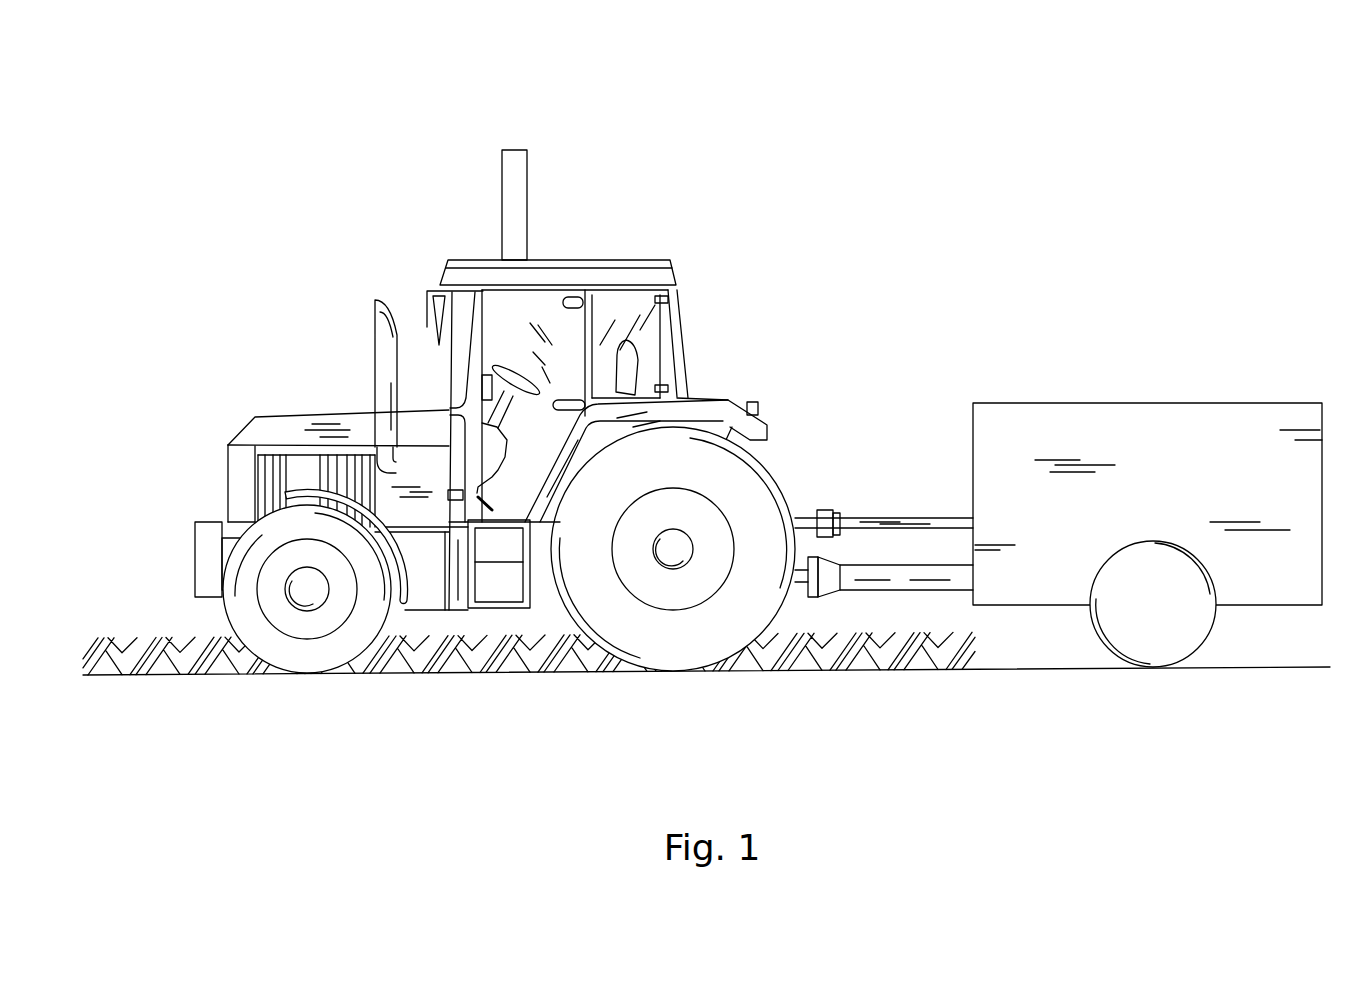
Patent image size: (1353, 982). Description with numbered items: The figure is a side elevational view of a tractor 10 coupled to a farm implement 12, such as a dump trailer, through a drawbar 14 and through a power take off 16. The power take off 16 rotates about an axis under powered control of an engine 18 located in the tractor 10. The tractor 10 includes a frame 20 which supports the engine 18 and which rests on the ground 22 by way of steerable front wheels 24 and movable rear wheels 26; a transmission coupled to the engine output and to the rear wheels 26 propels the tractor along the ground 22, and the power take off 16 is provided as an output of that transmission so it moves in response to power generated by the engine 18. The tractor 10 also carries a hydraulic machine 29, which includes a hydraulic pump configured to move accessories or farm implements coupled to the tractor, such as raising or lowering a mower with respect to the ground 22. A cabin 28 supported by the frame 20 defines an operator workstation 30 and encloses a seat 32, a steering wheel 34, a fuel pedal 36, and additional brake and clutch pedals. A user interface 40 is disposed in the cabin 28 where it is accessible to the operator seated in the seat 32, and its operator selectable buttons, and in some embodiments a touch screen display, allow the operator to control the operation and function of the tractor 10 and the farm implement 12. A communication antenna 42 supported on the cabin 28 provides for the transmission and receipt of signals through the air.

The tractor 10 is at (466, 240).
The farm implement 12 is at (1144, 403).
The drawbar 14 is at (803, 518).
The power take off 16 is at (828, 580).
The engine 18 is at (265, 490).
The frame 20 is at (428, 566).
The ground 22 is at (893, 671).
The steerable front wheels 24 is at (307, 657).
The movable rear wheels 26 is at (675, 650).
The cabin 28 is at (475, 325).
The hydraulic machine 29 is at (205, 567).
The operator workstation 30 is at (557, 342).
The seat 32 is at (633, 355).
The steering wheel 34 is at (503, 372).
The fuel pedal 36 is at (530, 585).
The user interface 40 is at (482, 388).
The communication antenna 42 is at (513, 152).